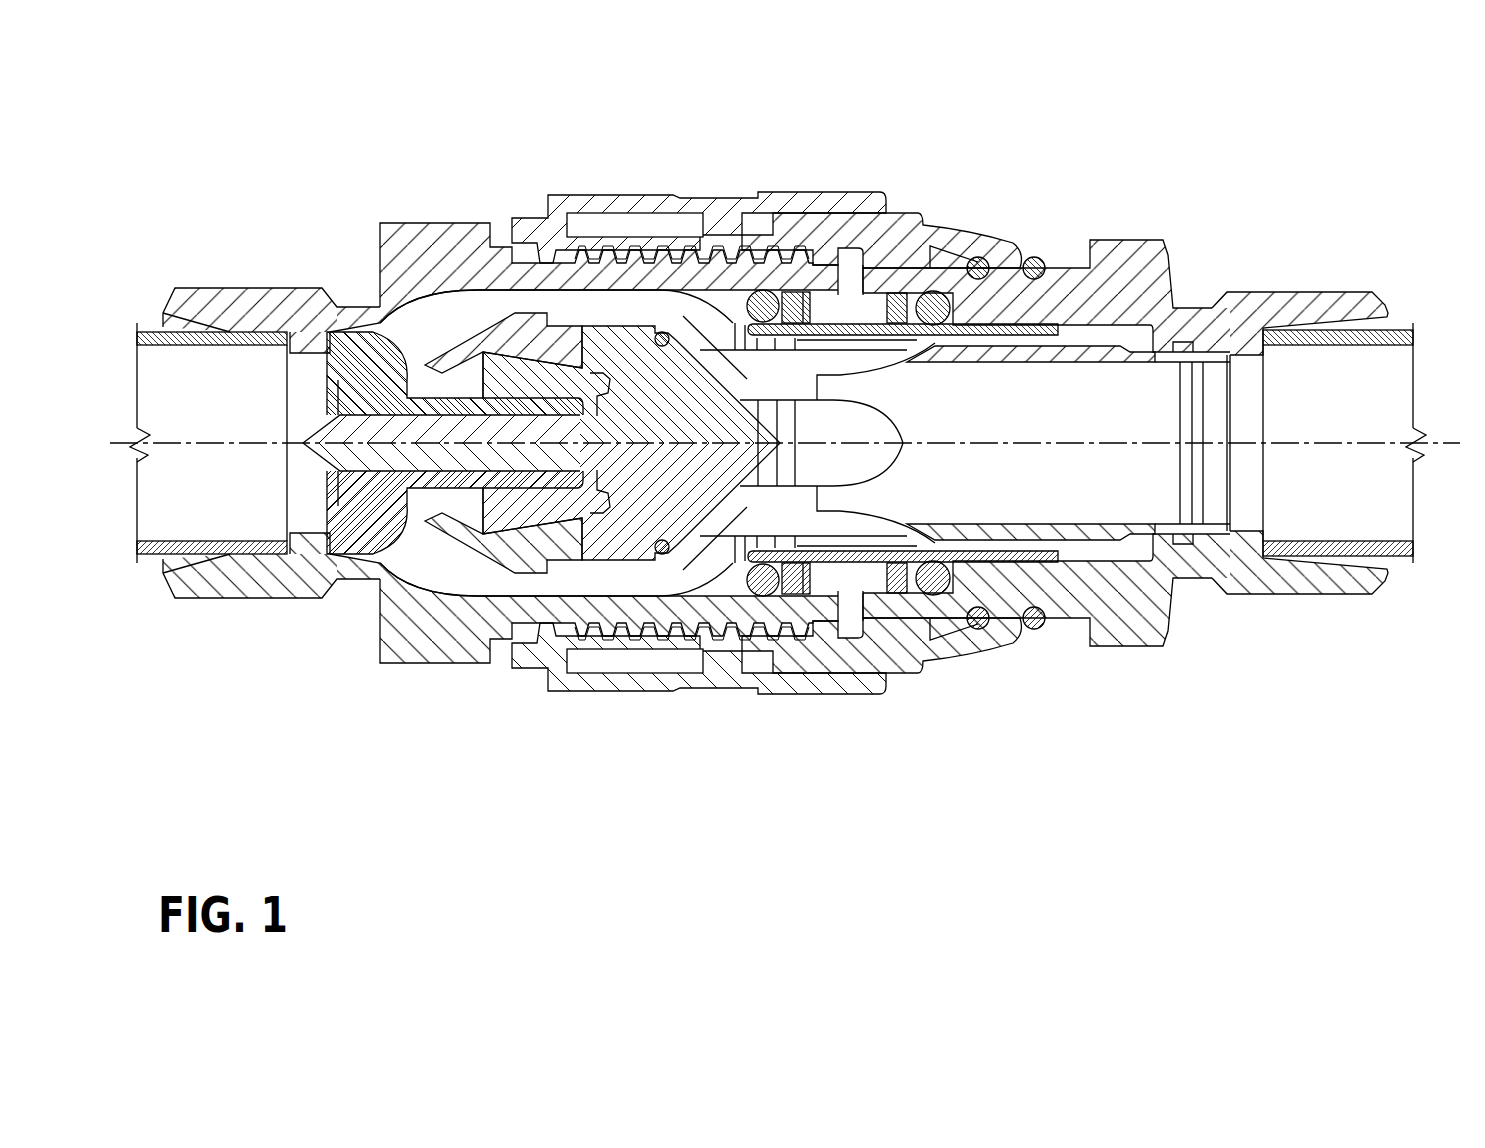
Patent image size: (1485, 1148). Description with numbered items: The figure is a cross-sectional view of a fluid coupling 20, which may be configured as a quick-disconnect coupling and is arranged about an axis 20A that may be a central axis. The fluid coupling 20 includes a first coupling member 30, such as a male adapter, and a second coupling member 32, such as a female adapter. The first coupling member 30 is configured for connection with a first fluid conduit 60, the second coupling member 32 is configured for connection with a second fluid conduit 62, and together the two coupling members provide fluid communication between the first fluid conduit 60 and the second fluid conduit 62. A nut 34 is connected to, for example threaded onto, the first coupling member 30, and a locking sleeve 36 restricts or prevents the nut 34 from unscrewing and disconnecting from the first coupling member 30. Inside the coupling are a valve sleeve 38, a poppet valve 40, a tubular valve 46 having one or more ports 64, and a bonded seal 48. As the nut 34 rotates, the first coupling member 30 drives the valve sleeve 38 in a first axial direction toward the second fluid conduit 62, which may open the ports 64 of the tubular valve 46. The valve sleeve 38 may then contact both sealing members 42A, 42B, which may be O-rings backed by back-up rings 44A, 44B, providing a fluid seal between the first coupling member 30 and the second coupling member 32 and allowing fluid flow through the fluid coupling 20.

The fluid coupling 20 is at (435, 133).
The axis 20A is at (1170, 420).
The first coupling member 30 is at (378, 258).
The second coupling member 32 is at (1132, 262).
The nut 34 is at (900, 250).
The locking sleeve 36 is at (808, 208).
The valve sleeve 38 is at (993, 330).
The poppet valve 40 is at (590, 350).
The sealing member 42A is at (763, 580).
The sealing member 42B is at (935, 585).
The back-up ring 44A is at (797, 598).
The back-up ring 44B is at (895, 590).
The tubular valve 46 is at (1030, 478).
The bonded seal 48 is at (663, 331).
The first fluid conduit 60 is at (200, 565).
The second fluid conduit 62 is at (1352, 553).
The port 64 is at (683, 570).